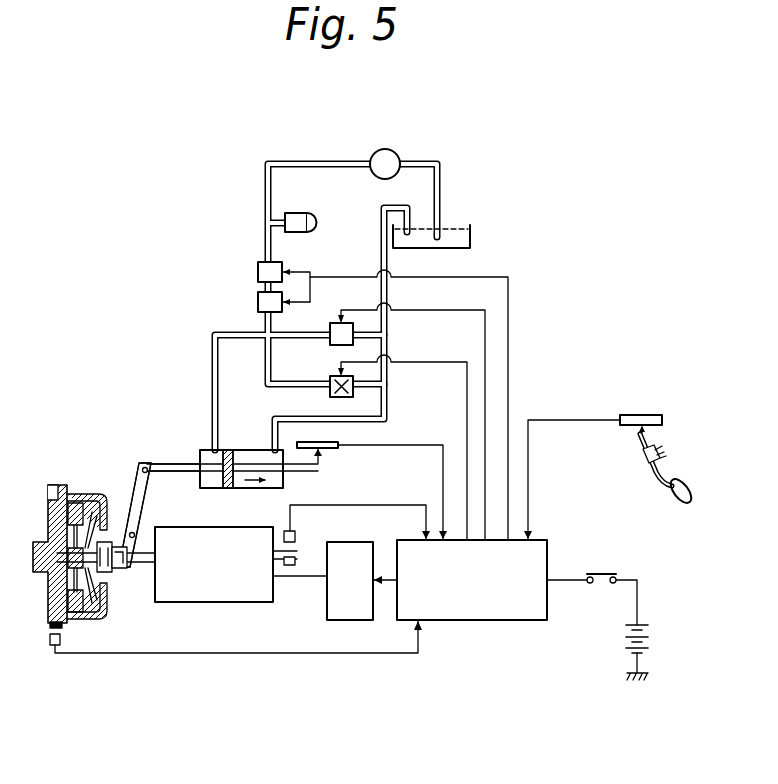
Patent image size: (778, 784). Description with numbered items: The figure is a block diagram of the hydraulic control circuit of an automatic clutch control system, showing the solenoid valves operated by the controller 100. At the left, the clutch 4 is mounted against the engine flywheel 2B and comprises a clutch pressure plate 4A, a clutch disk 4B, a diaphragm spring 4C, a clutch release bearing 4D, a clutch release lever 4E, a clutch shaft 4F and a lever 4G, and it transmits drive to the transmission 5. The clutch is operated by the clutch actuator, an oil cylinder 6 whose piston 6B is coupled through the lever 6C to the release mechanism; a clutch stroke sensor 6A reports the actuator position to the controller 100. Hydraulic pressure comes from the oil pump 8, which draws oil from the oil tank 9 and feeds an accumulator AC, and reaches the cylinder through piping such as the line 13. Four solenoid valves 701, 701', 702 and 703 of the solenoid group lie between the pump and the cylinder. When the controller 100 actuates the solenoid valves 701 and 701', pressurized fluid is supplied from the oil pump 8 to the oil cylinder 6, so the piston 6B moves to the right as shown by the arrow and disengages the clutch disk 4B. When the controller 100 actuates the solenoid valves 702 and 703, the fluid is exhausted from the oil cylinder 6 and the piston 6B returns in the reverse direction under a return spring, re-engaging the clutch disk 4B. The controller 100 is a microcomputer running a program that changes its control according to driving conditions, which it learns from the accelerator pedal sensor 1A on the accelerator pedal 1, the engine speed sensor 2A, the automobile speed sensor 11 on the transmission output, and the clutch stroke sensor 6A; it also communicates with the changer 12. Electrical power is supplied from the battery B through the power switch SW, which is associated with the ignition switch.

The accelerator pedal 1 is at (652, 480).
The accelerator pedal sensor 1A is at (645, 414).
The engine speed sensor 2A is at (50, 657).
The engine flywheel 2B is at (48, 492).
The clutch 4 is at (109, 553).
The clutch pressure plate 4A is at (106, 500).
The clutch disk 4B is at (67, 500).
The diaphragm spring 4C is at (110, 592).
The clutch release bearing 4D is at (112, 575).
The clutch release lever 4E is at (127, 570).
The clutch shaft 4F is at (143, 522).
The lever 4G is at (153, 497).
The transmission 5 is at (230, 603).
The clutch actuator 6 is at (201, 432).
The clutch stroke sensor 6A is at (340, 449).
The piston 6B is at (240, 455).
The actuator lever 6C is at (160, 462).
The oil pump 8 is at (398, 149).
The oil tank 9 is at (471, 229).
The automobile speed sensor 11 is at (298, 534).
The changer 12 is at (327, 610).
The hydraulic pipe 13 is at (220, 364).
The controller 100 is at (476, 622).
The solenoid valve 701 is at (350, 405).
The solenoid valve 701' is at (250, 267).
The solenoid valve 702 is at (353, 396).
The solenoid valve 703 is at (334, 322).
The accumulator AC is at (316, 212).
The battery B is at (652, 635).
The power switch SW is at (600, 572).